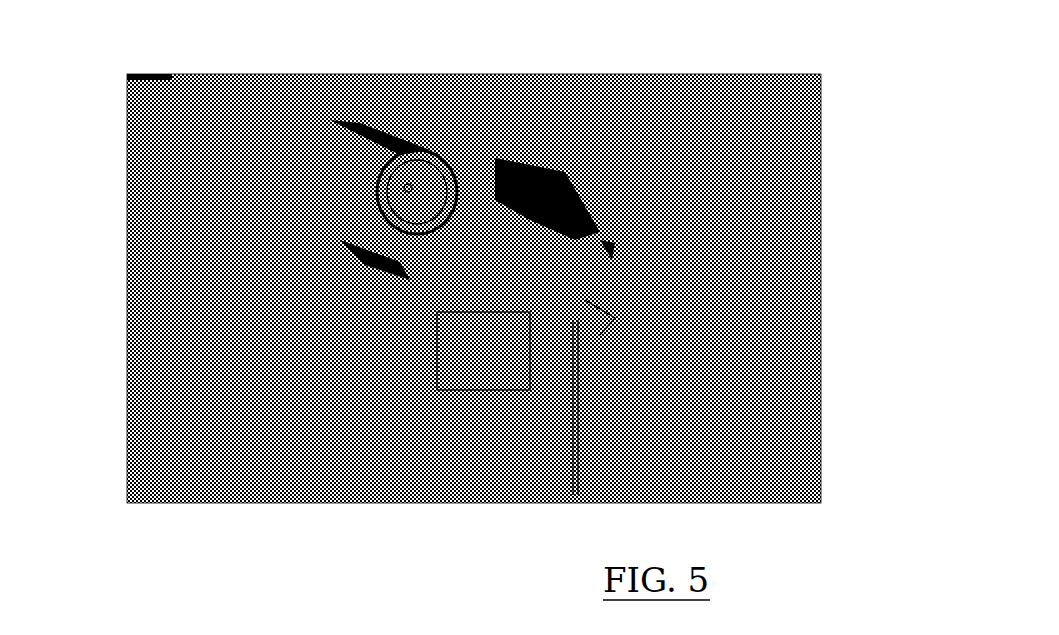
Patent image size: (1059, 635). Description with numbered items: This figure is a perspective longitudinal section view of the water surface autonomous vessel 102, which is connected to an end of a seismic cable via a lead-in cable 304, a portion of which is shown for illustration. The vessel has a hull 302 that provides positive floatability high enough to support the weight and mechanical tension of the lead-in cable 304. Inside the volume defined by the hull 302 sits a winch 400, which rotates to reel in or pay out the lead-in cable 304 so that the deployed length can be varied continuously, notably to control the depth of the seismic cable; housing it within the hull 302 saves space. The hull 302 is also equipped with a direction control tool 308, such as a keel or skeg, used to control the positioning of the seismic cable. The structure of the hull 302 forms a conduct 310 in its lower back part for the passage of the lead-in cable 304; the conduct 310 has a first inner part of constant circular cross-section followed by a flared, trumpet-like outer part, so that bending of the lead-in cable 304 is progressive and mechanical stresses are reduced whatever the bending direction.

The water surface autonomous vessel 102 is at (230, 63).
The hull 302 is at (568, 175).
The lead-in cable 304 is at (573, 423).
The direction control tool 308 is at (490, 372).
The conduct 310 is at (612, 328).
The winch 400 is at (397, 210).